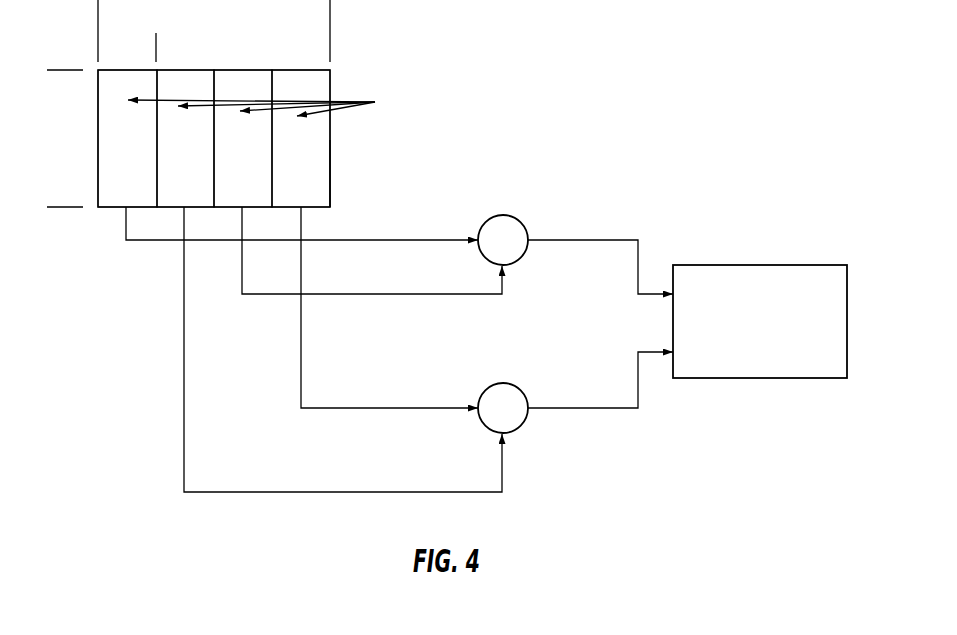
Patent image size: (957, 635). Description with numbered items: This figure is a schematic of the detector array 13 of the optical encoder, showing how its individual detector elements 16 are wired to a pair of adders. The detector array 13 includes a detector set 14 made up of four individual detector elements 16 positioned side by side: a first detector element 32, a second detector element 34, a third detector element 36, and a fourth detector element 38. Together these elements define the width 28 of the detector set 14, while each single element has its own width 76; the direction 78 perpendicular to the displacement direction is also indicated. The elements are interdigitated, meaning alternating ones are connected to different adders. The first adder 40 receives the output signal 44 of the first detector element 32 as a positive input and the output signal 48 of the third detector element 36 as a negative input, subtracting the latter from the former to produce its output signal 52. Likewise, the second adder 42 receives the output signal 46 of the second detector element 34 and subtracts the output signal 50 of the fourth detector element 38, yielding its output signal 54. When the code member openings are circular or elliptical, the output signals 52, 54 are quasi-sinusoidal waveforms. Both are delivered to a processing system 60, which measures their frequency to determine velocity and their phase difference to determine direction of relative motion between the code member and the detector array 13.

The detector array 13 is at (333, 81).
The detector set 14 is at (333, 178).
The individual detector elements 16 is at (266, 106).
The width of the detector set 28 is at (330, 20).
The first detector element 32 is at (141, 150).
The second detector element 34 is at (199, 150).
The third detector element 36 is at (257, 150).
The fourth detector element 38 is at (315, 150).
The first adder 40 is at (507, 213).
The second adder 42 is at (507, 381).
The output signal of the first detector element 44 is at (140, 240).
The output signal of the second detector element 46 is at (183, 375).
The output signal of the third detector element 48 is at (278, 294).
The output signal of the fourth detector element 50 is at (302, 372).
The output signal of the first adder 52 is at (610, 240).
The output signal of the second adder 54 is at (610, 408).
The processing system 60 is at (770, 265).
The width of a single detector element 76 is at (156, 45).
The direction perpendicular to the displacement direction 78 is at (65, 70).